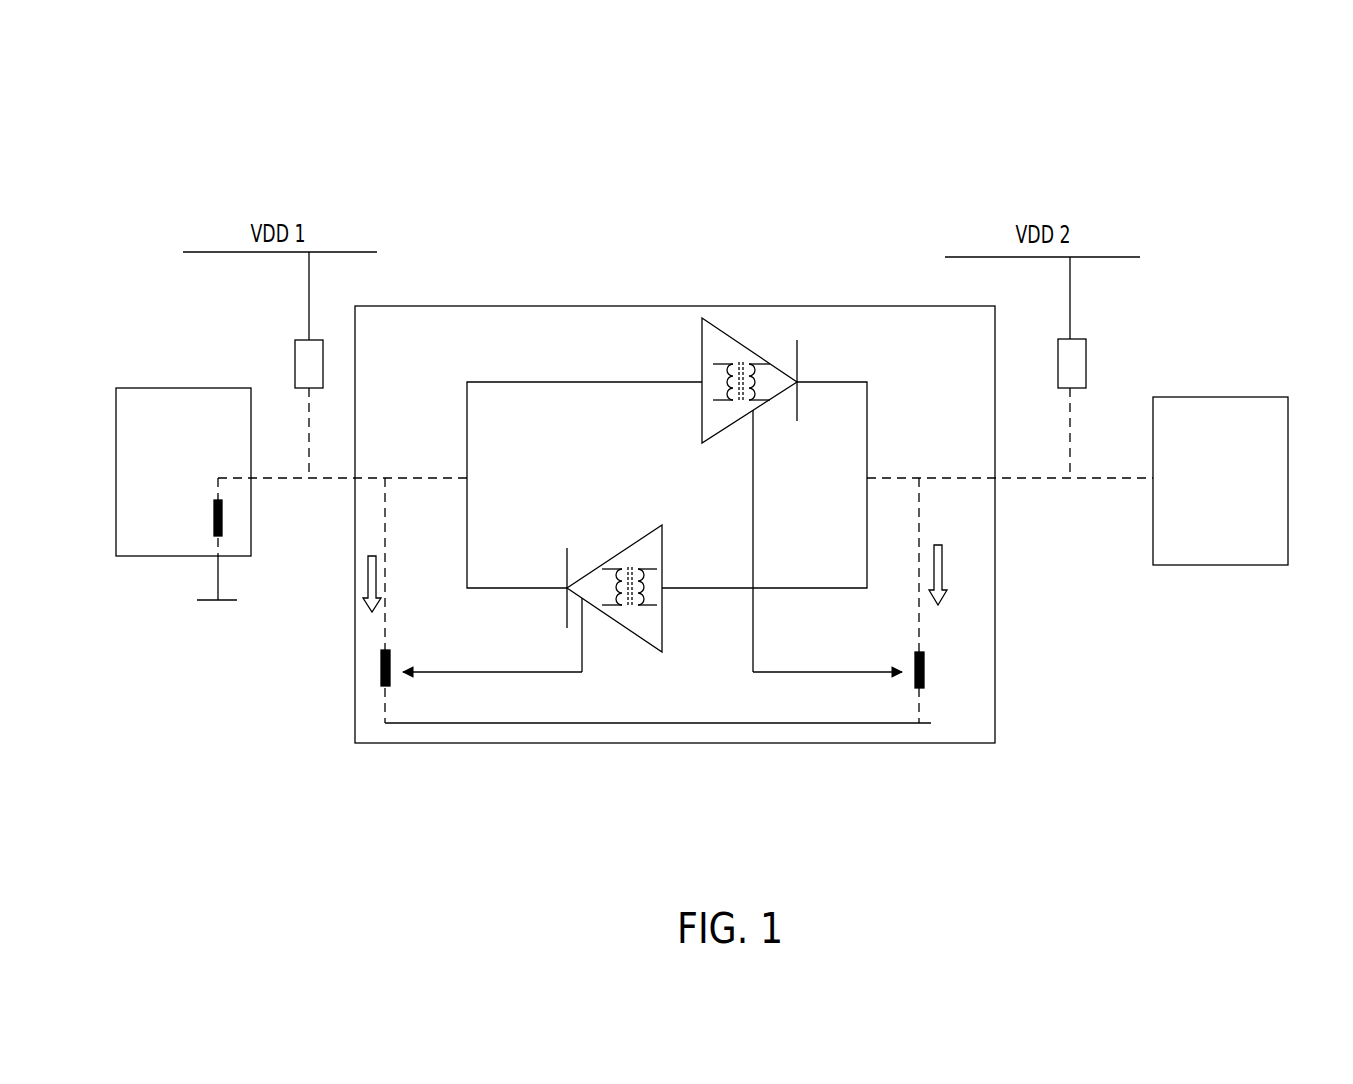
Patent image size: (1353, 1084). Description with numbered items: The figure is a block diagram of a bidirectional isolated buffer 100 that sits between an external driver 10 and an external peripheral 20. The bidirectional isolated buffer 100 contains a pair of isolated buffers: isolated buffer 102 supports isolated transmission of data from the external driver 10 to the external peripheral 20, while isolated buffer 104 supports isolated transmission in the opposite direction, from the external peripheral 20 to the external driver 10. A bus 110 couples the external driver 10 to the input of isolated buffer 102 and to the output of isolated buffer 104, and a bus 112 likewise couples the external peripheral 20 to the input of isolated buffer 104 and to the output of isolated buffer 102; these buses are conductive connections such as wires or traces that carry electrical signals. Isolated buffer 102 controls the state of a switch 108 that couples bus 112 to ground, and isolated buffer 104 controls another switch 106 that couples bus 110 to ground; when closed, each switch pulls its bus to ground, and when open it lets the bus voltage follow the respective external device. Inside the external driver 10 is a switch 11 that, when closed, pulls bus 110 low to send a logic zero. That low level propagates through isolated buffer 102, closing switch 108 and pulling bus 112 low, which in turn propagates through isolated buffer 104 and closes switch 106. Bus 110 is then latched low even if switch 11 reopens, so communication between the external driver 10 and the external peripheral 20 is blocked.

The bidirectional isolated buffer 100 is at (468, 172).
The isolated buffer 102 is at (764, 326).
The isolated buffer 104 is at (619, 652).
The switch 106 is at (364, 664).
The switch 108 is at (935, 671).
The bus 110 is at (380, 452).
The bus 112 is at (940, 452).
The external driver 10 is at (183, 388).
The switch 11 is at (192, 528).
The external peripheral 20 is at (1220, 397).